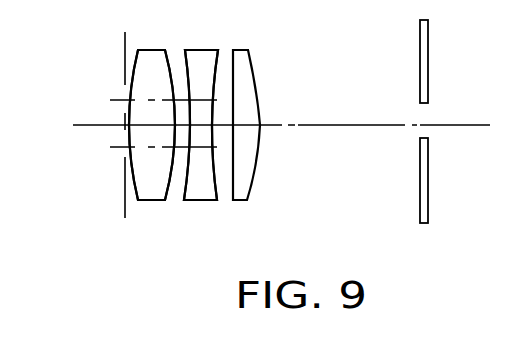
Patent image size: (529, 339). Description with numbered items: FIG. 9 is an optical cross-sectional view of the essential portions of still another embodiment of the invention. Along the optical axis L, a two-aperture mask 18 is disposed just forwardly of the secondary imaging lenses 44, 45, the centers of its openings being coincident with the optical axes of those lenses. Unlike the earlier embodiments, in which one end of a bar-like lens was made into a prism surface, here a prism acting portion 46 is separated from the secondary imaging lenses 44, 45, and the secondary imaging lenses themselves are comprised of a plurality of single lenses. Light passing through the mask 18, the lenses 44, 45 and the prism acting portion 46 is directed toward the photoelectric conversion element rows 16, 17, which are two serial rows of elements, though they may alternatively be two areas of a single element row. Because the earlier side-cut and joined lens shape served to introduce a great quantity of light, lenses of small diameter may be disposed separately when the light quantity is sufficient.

The photoelectric conversion element row 16 is at (418, 43).
The photoelectric conversion element row 17 is at (420, 198).
The two-aperture mask 18 is at (122, 58).
The secondary imaging lens 44 is at (230, 38).
The secondary imaging lens 45 is at (223, 218).
The prism acting portion 46 is at (247, 65).
The optical axis L is at (452, 123).